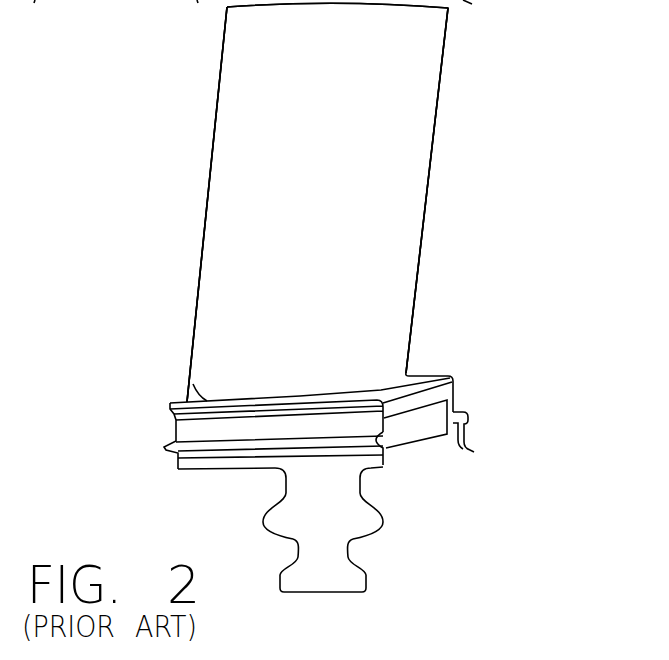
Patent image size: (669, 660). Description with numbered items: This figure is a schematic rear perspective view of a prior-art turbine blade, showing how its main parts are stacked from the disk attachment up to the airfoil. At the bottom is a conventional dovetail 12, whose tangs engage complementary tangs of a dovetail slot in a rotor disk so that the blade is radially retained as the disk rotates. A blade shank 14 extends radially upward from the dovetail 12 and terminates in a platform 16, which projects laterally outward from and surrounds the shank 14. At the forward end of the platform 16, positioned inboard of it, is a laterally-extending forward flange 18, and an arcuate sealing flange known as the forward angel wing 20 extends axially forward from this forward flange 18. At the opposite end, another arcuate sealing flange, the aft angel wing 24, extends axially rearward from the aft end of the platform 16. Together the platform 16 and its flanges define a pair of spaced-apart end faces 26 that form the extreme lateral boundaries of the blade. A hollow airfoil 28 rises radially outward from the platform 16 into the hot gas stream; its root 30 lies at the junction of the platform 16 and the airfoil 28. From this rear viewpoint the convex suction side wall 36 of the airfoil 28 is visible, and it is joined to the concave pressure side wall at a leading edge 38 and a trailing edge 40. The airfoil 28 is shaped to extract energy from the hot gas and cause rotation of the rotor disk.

The dovetail 12 is at (365, 570).
The blade shank 14 is at (352, 488).
The platform 16 is at (428, 378).
The forward flange 18 is at (468, 413).
The forward angel wing 20 is at (474, 452).
The aft angel wing 24 is at (170, 449).
The end faces 26 is at (410, 398).
The airfoil 28 is at (452, 167).
The root 30 is at (190, 378).
The suction side wall 36 is at (339, 200).
The leading edge 38 is at (440, 90).
The trailing edge 40 is at (213, 144).